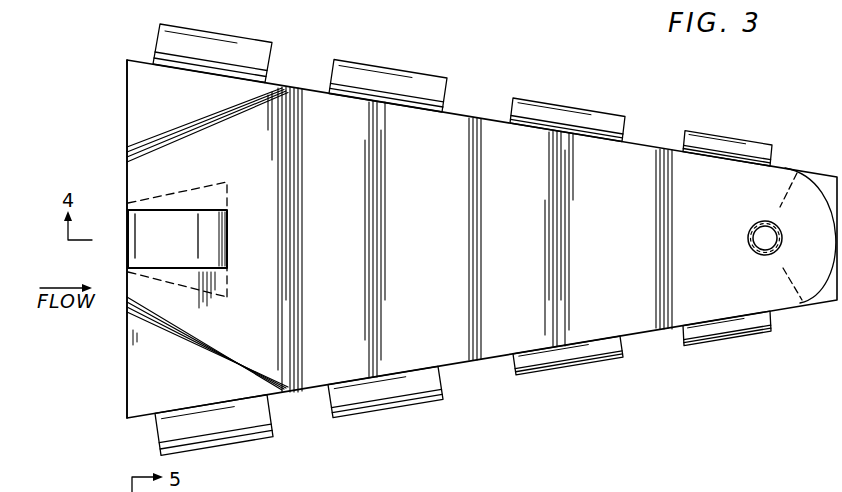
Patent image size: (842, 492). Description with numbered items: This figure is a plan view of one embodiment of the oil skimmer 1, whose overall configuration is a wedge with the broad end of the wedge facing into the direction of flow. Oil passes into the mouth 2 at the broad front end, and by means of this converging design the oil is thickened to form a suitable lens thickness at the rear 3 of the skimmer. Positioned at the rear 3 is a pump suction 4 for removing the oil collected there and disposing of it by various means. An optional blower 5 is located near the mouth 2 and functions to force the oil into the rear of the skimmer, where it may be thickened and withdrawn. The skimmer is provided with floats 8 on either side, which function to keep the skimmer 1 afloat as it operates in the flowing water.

The skimmer 1 is at (474, 93).
The mouth 2 is at (100, 113).
The rear 3 is at (773, 178).
The pump suction 4 is at (748, 240).
The blower 5 is at (220, 242).
The floats 8 is at (727, 137).